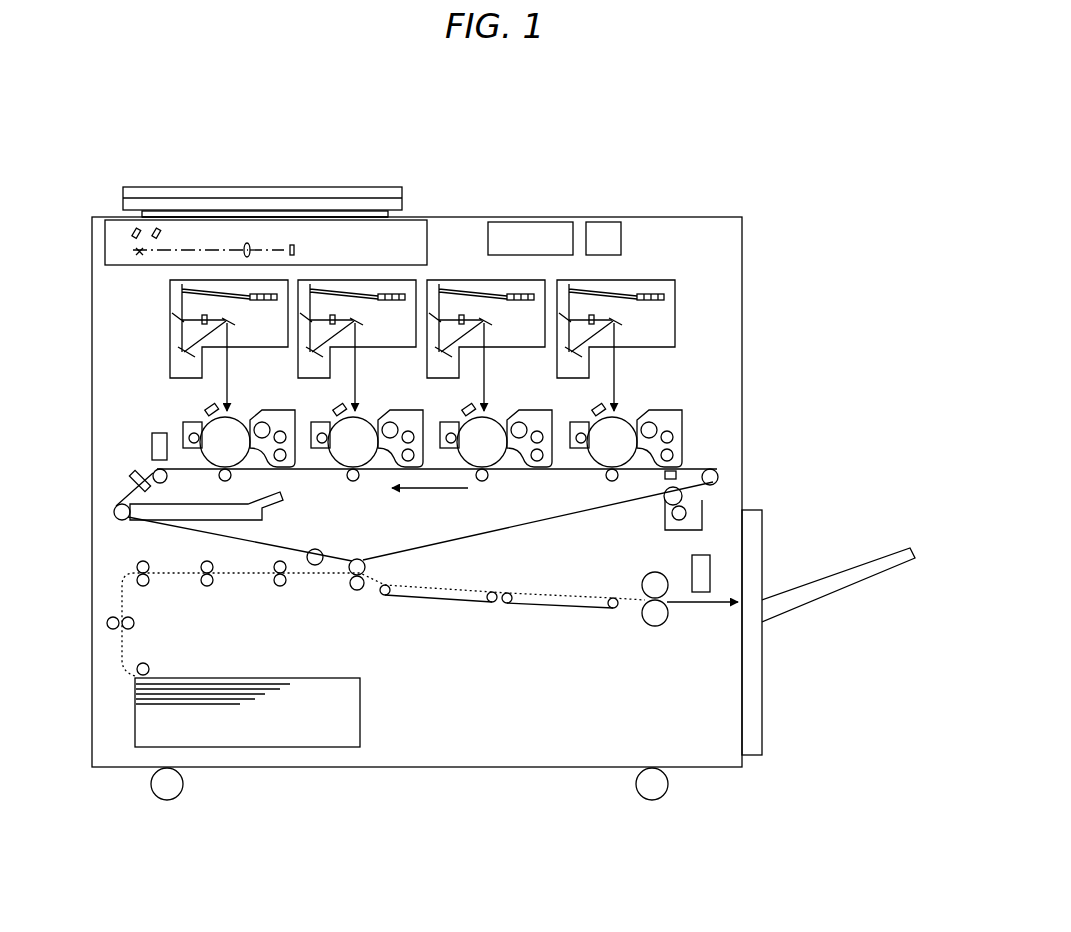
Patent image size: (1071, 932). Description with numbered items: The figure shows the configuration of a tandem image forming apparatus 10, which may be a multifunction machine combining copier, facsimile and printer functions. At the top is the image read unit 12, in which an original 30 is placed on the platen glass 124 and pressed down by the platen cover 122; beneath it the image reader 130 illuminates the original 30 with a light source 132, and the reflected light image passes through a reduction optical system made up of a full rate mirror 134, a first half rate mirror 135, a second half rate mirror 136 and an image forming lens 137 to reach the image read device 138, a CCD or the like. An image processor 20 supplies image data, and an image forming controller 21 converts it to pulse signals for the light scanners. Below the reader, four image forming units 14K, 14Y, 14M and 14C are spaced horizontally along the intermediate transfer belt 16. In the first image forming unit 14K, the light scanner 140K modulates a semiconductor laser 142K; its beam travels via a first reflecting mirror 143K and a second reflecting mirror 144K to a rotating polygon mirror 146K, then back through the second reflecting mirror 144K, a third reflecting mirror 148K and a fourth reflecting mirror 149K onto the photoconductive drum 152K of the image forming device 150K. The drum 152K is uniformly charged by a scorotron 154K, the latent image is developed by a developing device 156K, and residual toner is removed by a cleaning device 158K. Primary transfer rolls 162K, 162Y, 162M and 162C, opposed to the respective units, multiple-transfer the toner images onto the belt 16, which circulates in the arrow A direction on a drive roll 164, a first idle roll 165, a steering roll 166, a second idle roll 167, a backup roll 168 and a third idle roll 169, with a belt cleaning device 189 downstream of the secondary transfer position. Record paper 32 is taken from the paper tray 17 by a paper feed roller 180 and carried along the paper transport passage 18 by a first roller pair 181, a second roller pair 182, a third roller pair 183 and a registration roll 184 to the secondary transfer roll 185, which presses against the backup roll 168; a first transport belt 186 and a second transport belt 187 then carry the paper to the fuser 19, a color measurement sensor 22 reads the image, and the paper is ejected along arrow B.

The image forming apparatus 10 is at (738, 176).
The image read unit 12 is at (266, 167).
The platen cover 122 is at (235, 192).
The platen glass 124 is at (373, 210).
The original 30 is at (168, 213).
The image reader 130 is at (430, 222).
The light source 132 is at (165, 228).
The full rate mirror 134 is at (158, 240).
The first half rate mirror 135 is at (133, 228).
The second half rate mirror 136 is at (134, 252).
The image forming lens 137 is at (246, 244).
The image read device 138 is at (294, 253).
The image processor 20 is at (528, 222).
The image forming controller 21 is at (610, 222).
The fourth image forming unit 14C is at (192, 408).
The third image forming unit 14M is at (321, 408).
The second image forming unit 14Y is at (450, 408).
The first image forming unit 14K is at (660, 367).
The first light scanner 140K is at (660, 325).
The semiconductor laser 142K is at (606, 318).
The first reflecting mirror 143K is at (578, 340).
The second reflecting mirror 144K is at (596, 278).
The rotating polygon mirror 146K is at (647, 294).
The third reflecting mirror 148K is at (568, 358).
The fourth reflecting mirror 149K is at (614, 330).
The image forming device 150K is at (688, 410).
The photoconductive drum 152K is at (636, 424).
The scorotron 154K is at (594, 410).
The developing device 156K is at (683, 429).
The cleaning device 158K is at (584, 470).
The fourth primary transfer roll 162C is at (225, 482).
The third primary transfer roll 162M is at (353, 482).
The second primary transfer roll 162Y is at (483, 482).
The first primary transfer roll 162K is at (620, 498).
The intermediate transfer belt 16 is at (525, 540).
The drive roll 164 is at (719, 478).
The first idle roll 165 is at (155, 473).
The steering roll 166 is at (120, 521).
The second idle roll 167 is at (310, 550).
The backup roll 168 is at (368, 551).
The third idle roll 169 is at (684, 494).
The belt cleaning device 189 is at (673, 530).
The paper tray 17 is at (360, 692).
The record paper 32 is at (208, 683).
The paper transport passage 18 is at (121, 601).
The paper feed roller 180 is at (146, 663).
The first roller pair 181 is at (135, 624).
The second roller pair 182 is at (150, 564).
The third roller pair 183 is at (207, 586).
The registration roll 184 is at (281, 586).
The secondary transfer roll 185 is at (356, 590).
The first transport belt 186 is at (430, 601).
The second transport belt 187 is at (556, 607).
The fuser 19 is at (652, 636).
The color measurement sensor 22 is at (710, 572).
The arrow A direction A is at (430, 510).
The arrow B is at (702, 624).